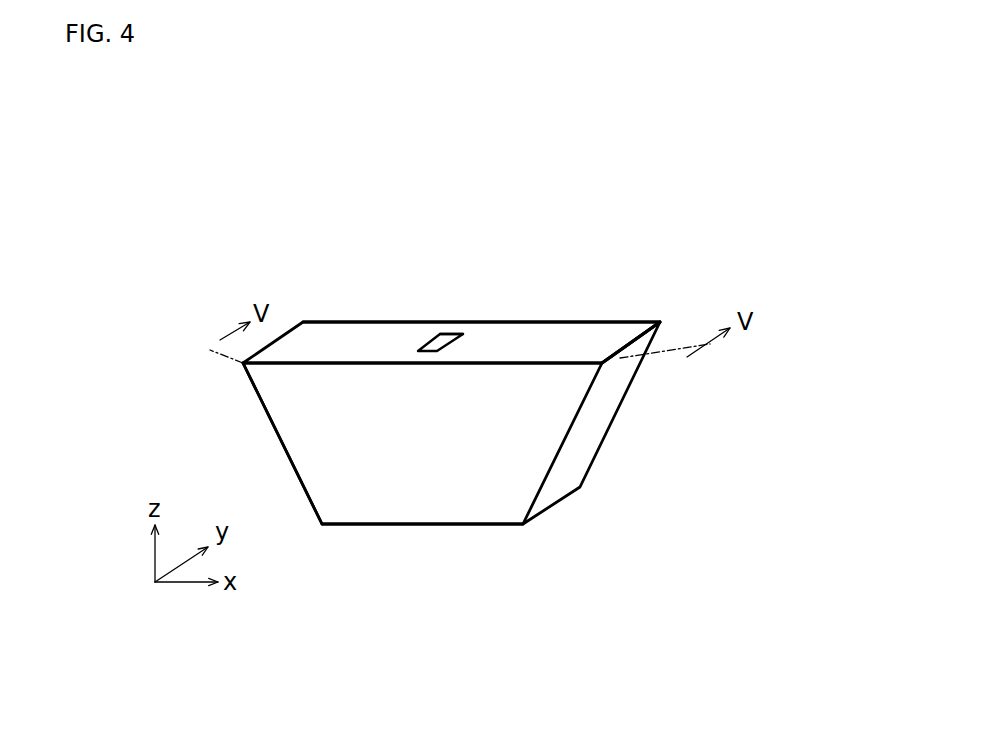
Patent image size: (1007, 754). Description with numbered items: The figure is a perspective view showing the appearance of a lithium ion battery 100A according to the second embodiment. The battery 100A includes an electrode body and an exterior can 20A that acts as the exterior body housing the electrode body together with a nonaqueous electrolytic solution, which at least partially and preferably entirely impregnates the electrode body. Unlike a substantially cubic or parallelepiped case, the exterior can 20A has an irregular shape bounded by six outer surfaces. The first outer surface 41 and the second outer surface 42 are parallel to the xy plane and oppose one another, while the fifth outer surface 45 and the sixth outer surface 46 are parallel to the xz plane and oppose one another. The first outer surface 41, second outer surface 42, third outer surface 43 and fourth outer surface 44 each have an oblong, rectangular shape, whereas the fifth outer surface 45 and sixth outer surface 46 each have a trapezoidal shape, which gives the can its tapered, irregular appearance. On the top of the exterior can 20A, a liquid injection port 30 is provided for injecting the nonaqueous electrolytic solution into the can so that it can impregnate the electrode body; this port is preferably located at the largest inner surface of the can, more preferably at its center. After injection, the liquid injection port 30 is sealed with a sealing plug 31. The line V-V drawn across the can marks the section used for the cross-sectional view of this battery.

The lithium ion battery 100A is at (445, 357).
The exterior can 20A is at (342, 342).
The liquid injection port 30 is at (452, 333).
The sealing plug 31 is at (440, 333).
The first outer surface 41 is at (532, 332).
The second outer surface 42 is at (478, 500).
The third outer surface 43 is at (322, 415).
The fourth outer surface 44 is at (577, 450).
The fifth outer surface 45 is at (368, 493).
The sixth outer surface 46 is at (578, 352).